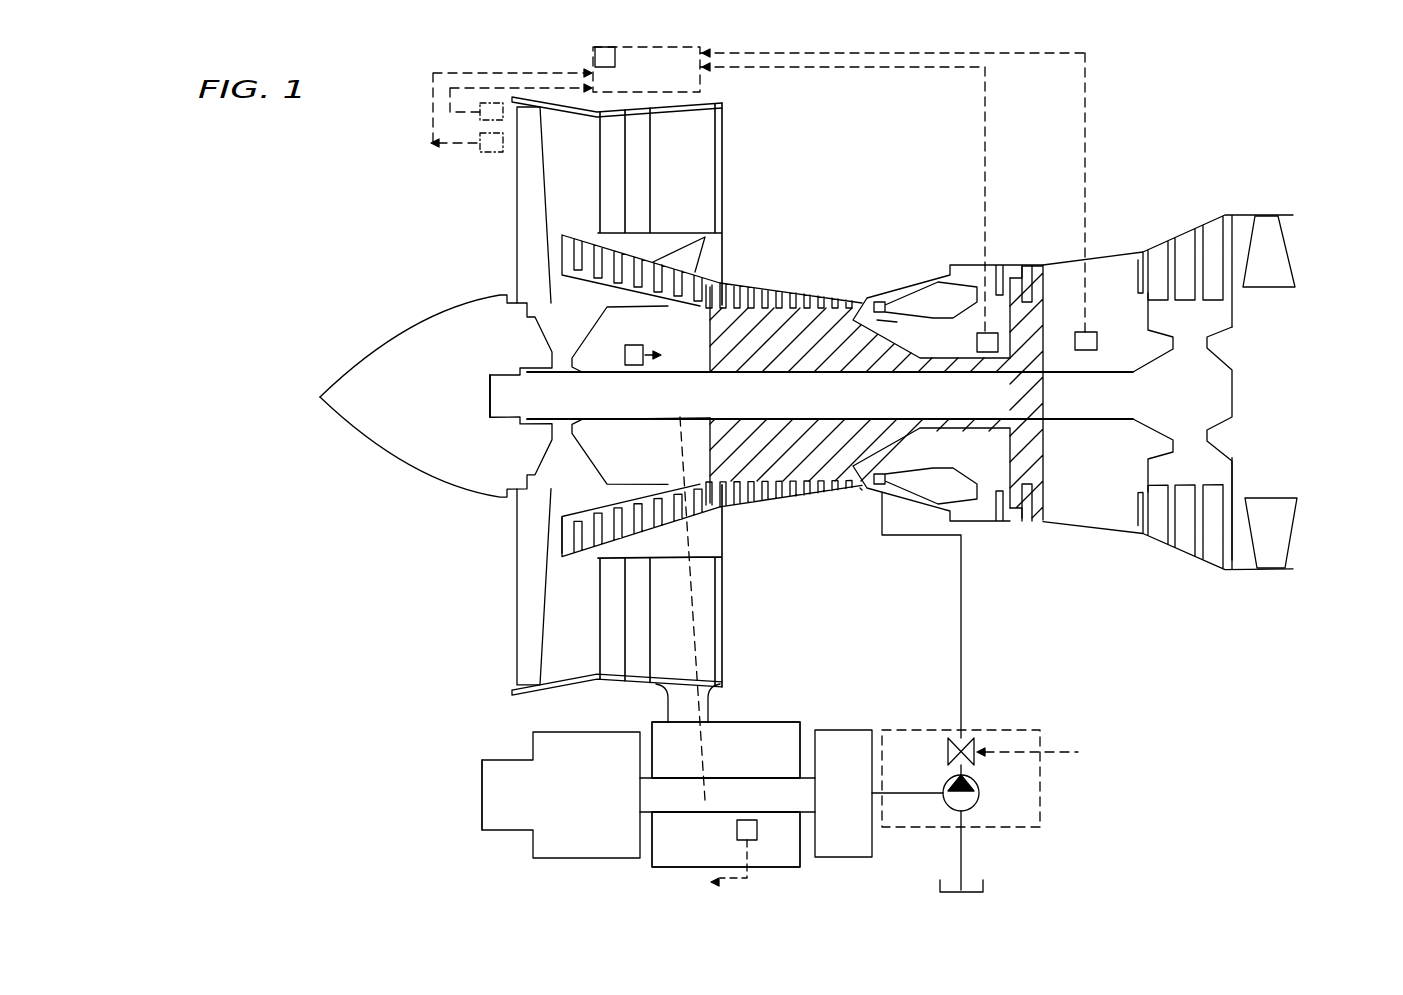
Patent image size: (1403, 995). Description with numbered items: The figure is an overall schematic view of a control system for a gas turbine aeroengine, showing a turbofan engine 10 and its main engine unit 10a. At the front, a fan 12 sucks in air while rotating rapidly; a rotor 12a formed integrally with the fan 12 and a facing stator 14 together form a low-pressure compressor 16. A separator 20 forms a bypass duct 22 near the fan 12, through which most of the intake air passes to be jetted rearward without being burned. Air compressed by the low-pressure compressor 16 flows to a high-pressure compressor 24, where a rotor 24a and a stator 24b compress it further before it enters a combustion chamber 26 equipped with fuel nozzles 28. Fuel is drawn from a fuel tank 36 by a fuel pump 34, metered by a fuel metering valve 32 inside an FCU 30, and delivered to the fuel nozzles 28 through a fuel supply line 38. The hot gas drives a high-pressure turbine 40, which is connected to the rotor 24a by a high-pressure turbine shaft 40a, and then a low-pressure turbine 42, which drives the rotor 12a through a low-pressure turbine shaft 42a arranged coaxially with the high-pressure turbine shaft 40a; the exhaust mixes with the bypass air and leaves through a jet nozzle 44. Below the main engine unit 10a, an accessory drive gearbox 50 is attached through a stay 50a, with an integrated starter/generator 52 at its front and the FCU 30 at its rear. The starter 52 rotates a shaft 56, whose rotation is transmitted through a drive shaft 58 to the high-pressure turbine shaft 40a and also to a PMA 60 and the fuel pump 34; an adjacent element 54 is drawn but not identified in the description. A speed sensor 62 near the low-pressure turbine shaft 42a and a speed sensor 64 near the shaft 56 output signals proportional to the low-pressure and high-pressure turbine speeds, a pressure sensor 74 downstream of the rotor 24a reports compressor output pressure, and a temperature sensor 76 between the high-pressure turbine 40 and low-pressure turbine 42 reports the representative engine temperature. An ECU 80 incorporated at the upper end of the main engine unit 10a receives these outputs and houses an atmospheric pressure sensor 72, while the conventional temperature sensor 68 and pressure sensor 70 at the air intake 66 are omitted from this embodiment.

The turbofan engine 10 is at (770, 185).
The main engine unit 10a is at (744, 588).
The fan 12 is at (527, 566).
The rotor 12a is at (612, 498).
The stator 14 is at (567, 552).
The low-pressure compressor 16 is at (673, 313).
The separator 20 is at (720, 238).
The duct 22 is at (694, 178).
The high-pressure compressor 24 is at (833, 501).
The rotor 24a is at (858, 327).
The stator 24b is at (830, 495).
The combustion chamber 26 is at (907, 298).
The fuel nozzles 28 is at (895, 470).
The FCU (fuel control unit) 30 is at (885, 728).
The fuel metering valve 32 is at (965, 738).
The fuel pump 34 is at (943, 779).
The fuel tank 36 is at (940, 890).
The fuel supply line 38 is at (958, 623).
The high-pressure turbine 40 is at (1042, 307).
The high-pressure turbine shaft 40a is at (676, 420).
The low-pressure turbine 42 is at (1160, 323).
The low-pressure turbine shaft 42a is at (828, 403).
The jet nozzle 44 is at (1277, 342).
The accessory drive gearbox 50 is at (742, 722).
The stay 50a is at (668, 697).
The integrated starter/generator 52 is at (588, 808).
The starter output shaft 54 is at (473, 750).
The shaft 56 is at (678, 813).
The drive shaft 58 is at (706, 749).
The PMA (permanent magnet alternator) 60 is at (858, 808).
The N1 sensor (speed sensor) 62 is at (625, 355).
The N2 sensor (speed sensor) 64 is at (757, 830).
The air intake (engine inlet) 66 is at (507, 95).
The temperature sensor 68 is at (479, 102).
The pressure sensor 70 is at (490, 152).
The P0 sensor (pressure sensor) 72 is at (593, 52).
The P3 sensor (pressure sensor) 74 is at (977, 342).
The ITT sensor (temperature sensor) 76 is at (1093, 328).
The ECU (electronic control unit) 80 is at (703, 85).